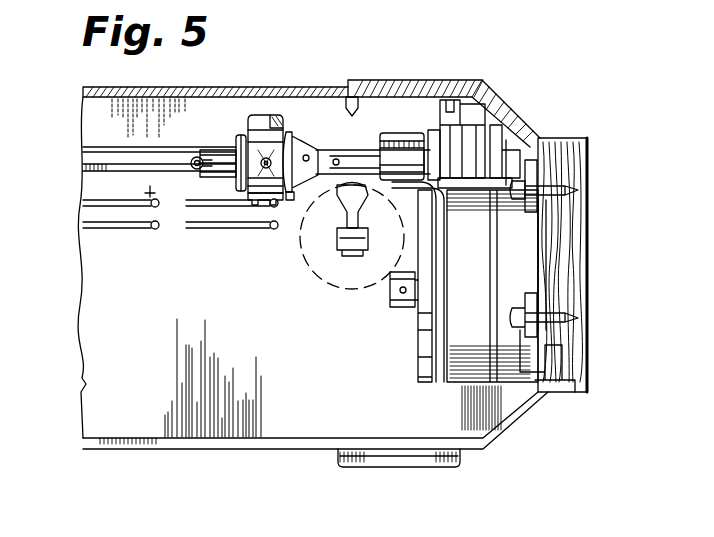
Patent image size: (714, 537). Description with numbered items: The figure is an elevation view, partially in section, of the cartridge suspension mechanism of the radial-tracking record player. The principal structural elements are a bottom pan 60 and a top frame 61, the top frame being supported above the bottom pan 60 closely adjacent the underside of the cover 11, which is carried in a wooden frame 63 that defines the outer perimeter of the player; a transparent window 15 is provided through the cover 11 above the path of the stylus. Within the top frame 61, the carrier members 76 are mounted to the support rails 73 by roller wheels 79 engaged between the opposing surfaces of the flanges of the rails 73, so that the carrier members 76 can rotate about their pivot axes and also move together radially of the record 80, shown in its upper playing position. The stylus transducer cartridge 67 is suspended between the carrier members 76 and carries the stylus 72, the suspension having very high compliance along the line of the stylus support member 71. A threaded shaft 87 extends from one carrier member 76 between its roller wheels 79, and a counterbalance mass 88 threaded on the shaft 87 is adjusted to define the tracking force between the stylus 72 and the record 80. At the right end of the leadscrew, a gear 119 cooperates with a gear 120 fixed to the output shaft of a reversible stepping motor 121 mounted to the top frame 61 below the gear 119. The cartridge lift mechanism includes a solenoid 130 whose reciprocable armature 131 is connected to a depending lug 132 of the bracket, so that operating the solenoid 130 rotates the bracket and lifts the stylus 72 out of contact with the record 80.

The transparent window 15 is at (150, 88).
The cover 11 is at (463, 82).
The wooden frame 63 is at (587, 152).
The stepping motor 121 is at (518, 254).
The bottom pan 60 is at (177, 452).
The support rails 73 is at (83, 147).
The roller wheels 79 is at (188, 162).
The carrier members 76 is at (236, 157).
The stylus transducer cartridge 67 is at (247, 200).
The stylus 72 is at (267, 203).
The stylus support member 71 is at (292, 202).
The record 80 is at (210, 197).
The threaded shaft 87 is at (356, 128).
The counterbalance mass 88 is at (398, 141).
The top frame 61 is at (520, 150).
The gear 120 is at (420, 365).
The gear 119 is at (417, 198).
The solenoid 130 is at (350, 289).
The depending lug 132 is at (330, 253).
The reciprocable armature 131 is at (337, 282).